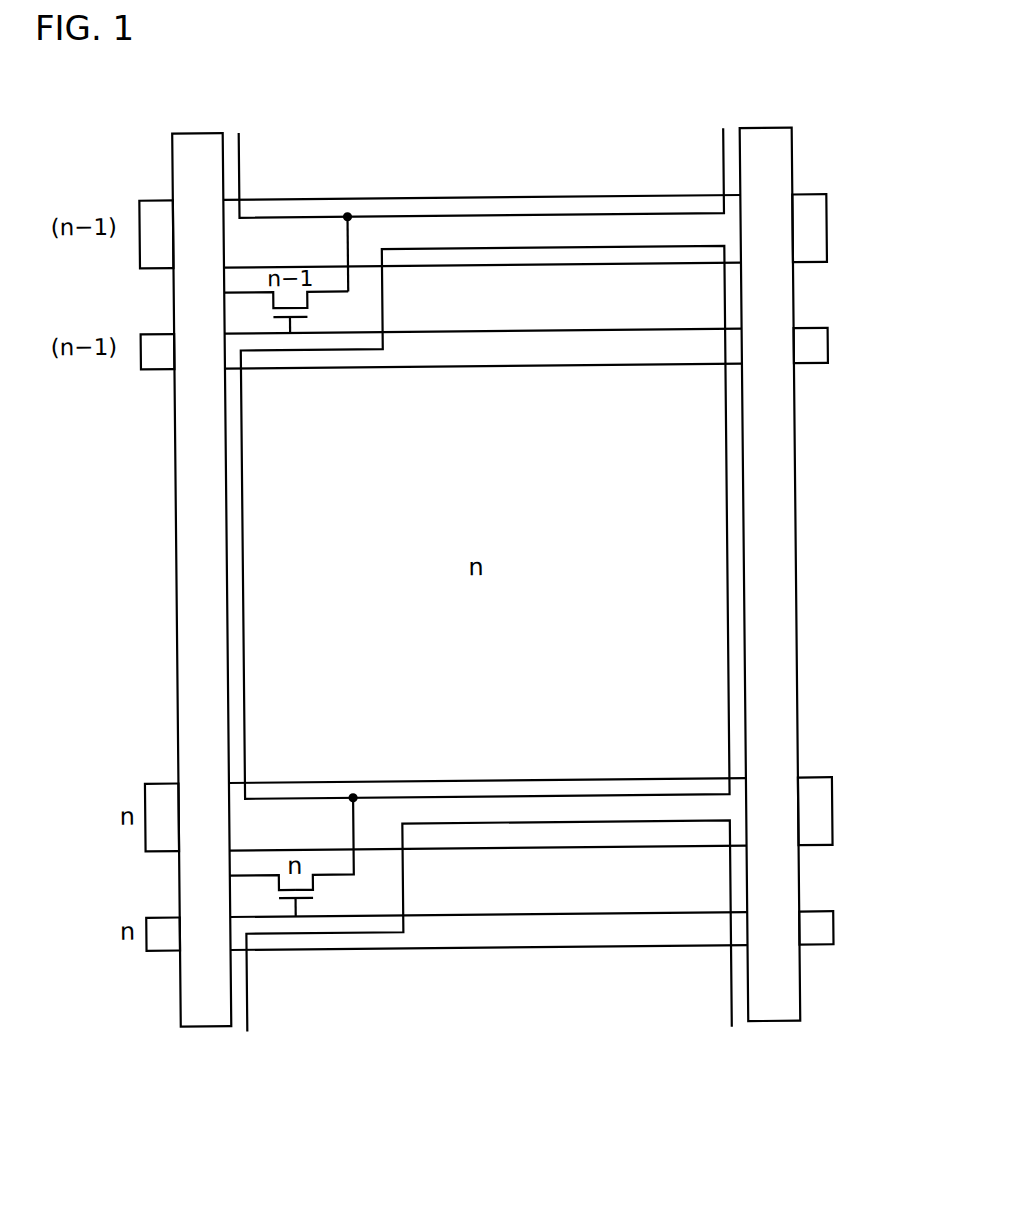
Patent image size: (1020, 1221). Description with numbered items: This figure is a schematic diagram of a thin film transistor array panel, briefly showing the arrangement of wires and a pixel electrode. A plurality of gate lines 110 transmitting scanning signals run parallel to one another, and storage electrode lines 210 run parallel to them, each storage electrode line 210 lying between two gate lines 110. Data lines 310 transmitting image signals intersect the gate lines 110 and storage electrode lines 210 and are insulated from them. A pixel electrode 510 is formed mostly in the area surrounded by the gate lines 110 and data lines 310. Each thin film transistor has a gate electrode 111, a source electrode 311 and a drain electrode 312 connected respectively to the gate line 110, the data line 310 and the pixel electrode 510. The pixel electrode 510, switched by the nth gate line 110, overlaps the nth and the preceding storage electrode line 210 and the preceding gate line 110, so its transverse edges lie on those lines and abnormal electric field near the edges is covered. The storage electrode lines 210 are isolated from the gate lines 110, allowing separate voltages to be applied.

The gate line 110 is at (830, 348).
The storage electrode line 210 is at (830, 231).
The data line 310 is at (176, 997).
The pixel electrode 510 is at (712, 587).
The gate electrode 111 is at (280, 897).
The source electrode 311 is at (247, 873).
The drain electrode 312 is at (330, 873).